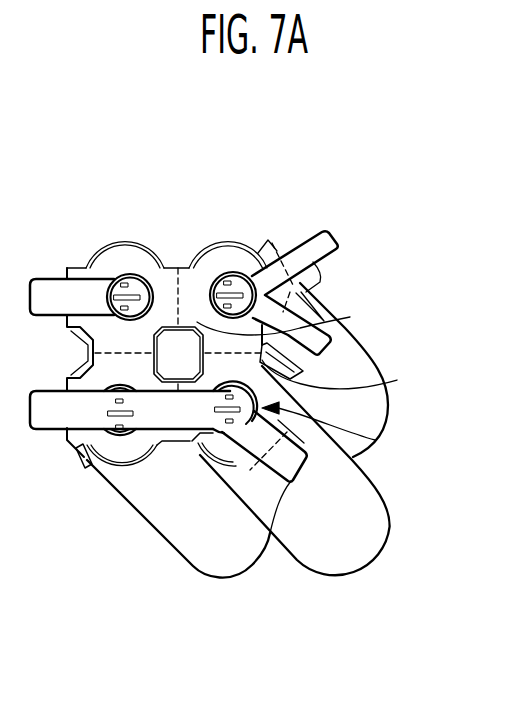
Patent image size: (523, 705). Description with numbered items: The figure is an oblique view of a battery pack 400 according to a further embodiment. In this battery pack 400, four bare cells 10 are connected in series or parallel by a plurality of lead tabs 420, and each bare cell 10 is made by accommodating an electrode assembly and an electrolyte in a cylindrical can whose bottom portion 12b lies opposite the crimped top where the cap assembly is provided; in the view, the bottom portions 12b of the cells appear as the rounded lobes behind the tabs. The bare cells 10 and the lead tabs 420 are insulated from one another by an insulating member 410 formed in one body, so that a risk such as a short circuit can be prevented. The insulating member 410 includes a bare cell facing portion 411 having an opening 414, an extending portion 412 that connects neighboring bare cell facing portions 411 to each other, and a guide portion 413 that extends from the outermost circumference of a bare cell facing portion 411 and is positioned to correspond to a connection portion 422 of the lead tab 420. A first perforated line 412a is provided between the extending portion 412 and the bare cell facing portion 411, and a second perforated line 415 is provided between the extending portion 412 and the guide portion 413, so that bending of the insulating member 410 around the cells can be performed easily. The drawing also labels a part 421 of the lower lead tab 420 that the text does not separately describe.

The battery pack 400 is at (433, 150).
The insulating member 410 is at (323, 162).
The bare cell facing portion 411 is at (128, 262).
The extending portion 412 is at (181, 262).
The first perforated line 412a is at (350, 317).
The guide portion 413 is at (313, 262).
The opening 414 is at (375, 440).
The second perforated line 415 is at (397, 380).
The lead tab 420 is at (280, 638).
The lower electrode terminal 421 is at (190, 452).
The connection portion 422 is at (274, 545).
The bottom portion 12b is at (384, 534).
The bare cell 10 is at (294, 578).